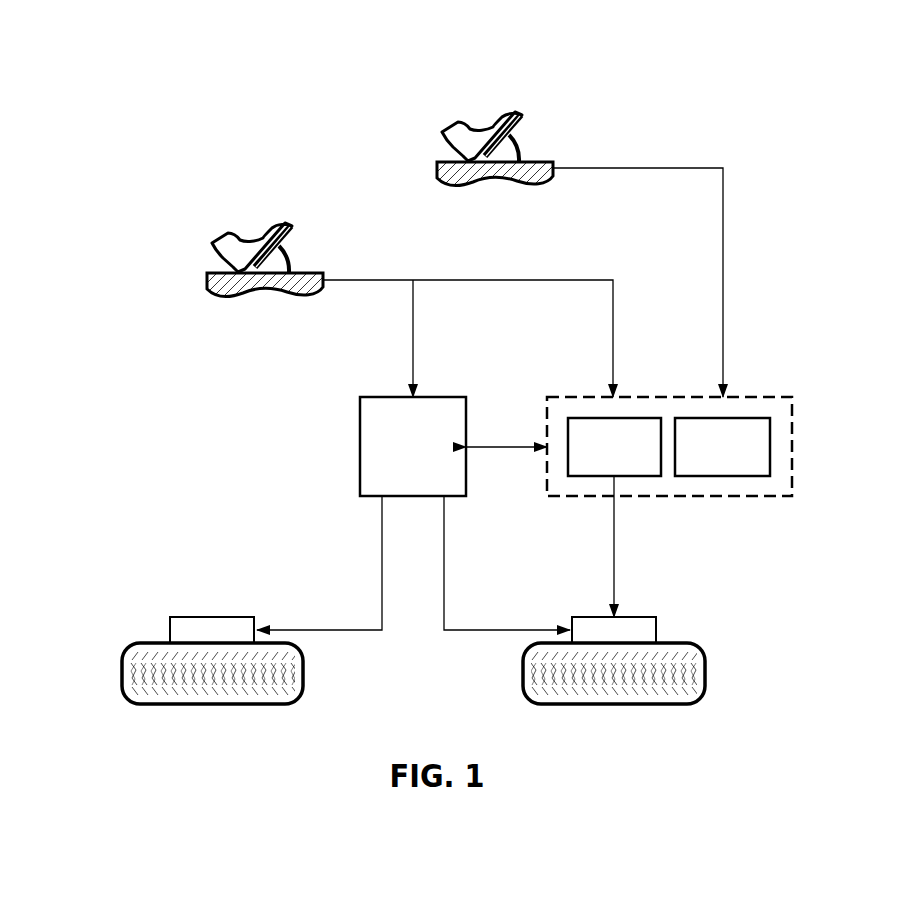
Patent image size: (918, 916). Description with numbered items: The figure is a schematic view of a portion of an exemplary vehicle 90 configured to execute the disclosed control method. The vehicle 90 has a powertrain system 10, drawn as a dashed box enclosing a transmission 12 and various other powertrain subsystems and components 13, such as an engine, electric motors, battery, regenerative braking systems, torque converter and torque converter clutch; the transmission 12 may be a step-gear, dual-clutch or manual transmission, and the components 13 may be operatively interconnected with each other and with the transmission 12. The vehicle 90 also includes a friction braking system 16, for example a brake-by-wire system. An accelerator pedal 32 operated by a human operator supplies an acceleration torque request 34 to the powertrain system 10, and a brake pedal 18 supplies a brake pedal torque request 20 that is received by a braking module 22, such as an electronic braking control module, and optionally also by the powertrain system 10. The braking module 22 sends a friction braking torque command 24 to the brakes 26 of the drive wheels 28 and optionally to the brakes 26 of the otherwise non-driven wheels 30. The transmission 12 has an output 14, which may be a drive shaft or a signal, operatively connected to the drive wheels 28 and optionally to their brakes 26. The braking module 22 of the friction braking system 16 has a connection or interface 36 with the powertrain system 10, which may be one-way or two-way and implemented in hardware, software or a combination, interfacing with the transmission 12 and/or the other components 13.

The vehicle 90 is at (173, 45).
The friction braking system 16 is at (252, 433).
The brake pedal 18 is at (292, 262).
The accelerator pedal 32 is at (520, 152).
The brake pedal torque request 20 is at (482, 279).
The acceleration torque request 34 is at (643, 168).
The braking module 22 is at (413, 446).
The connection or interface 36 is at (508, 447).
The powertrain system 10 is at (675, 409).
The transmission 12 is at (614, 447).
The powertrain subsystems and components 13 is at (722, 447).
The friction braking torque command 24 is at (335, 630).
The output 14 is at (614, 548).
The brakes 26 is at (233, 617).
The non-driven wheels 30 is at (122, 658).
The drive wheels 28 is at (705, 660).